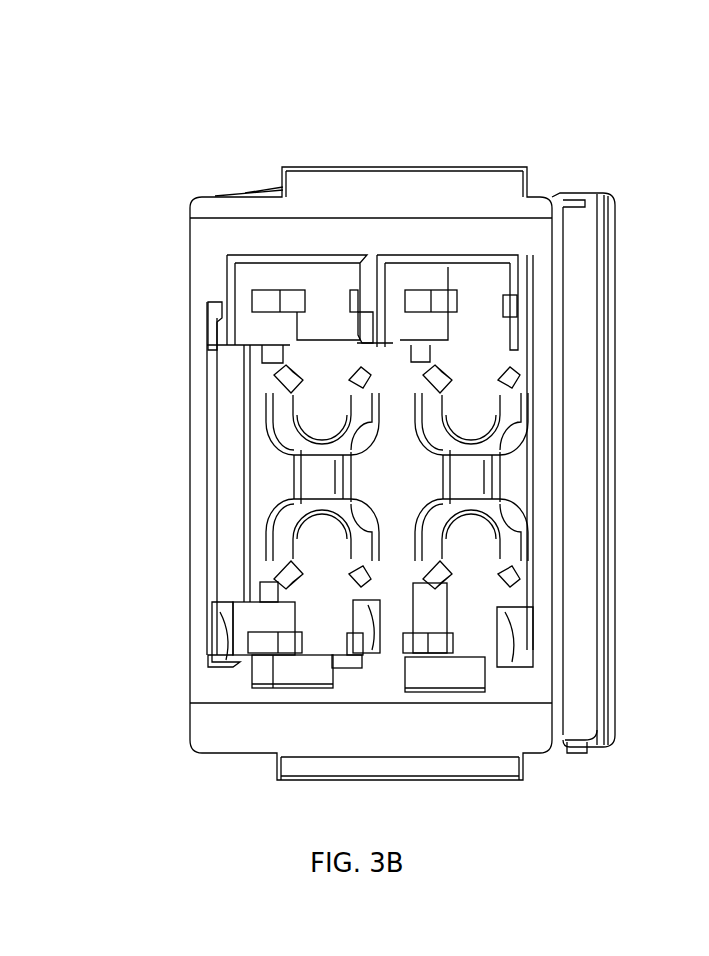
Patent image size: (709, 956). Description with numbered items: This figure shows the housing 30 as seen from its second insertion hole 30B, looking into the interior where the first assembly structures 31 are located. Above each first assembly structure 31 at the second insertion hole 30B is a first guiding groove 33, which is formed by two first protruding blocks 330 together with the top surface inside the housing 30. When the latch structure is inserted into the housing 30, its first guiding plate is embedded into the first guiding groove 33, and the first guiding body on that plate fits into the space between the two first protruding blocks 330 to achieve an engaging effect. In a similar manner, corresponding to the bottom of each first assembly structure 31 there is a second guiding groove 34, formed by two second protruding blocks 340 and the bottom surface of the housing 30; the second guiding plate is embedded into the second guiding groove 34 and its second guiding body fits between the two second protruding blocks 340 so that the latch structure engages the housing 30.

The housing 30 is at (476, 175).
The second insertion hole 30B is at (492, 350).
The first assembly structure 31 is at (312, 472).
The first guiding groove 33 is at (270, 272).
The first protruding blocks 330 is at (353, 307).
The second protruding blocks 340 is at (258, 638).
The second guiding groove 34 is at (284, 680).